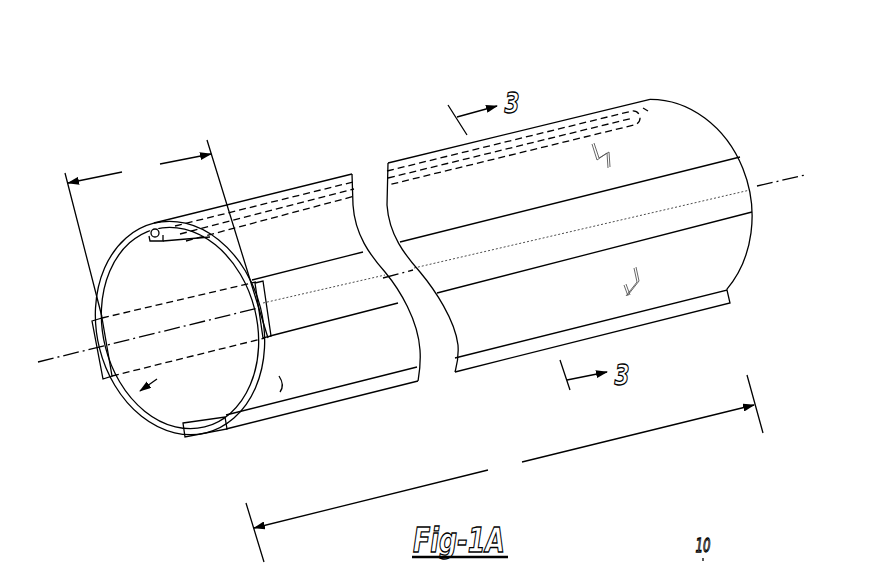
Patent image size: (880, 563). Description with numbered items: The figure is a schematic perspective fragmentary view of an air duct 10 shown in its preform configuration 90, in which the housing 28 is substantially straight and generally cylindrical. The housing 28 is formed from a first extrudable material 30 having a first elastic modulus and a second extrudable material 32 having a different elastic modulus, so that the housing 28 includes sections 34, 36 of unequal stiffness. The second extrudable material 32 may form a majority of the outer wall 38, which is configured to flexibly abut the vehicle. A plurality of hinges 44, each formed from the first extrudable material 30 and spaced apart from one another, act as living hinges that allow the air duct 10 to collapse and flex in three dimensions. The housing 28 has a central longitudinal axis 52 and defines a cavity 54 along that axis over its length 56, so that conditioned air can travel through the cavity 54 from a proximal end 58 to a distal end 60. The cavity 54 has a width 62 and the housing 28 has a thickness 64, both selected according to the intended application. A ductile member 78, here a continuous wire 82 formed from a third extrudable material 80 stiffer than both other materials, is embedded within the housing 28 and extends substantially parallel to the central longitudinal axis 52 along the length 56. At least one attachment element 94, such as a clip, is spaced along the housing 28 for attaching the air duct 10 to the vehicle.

The air duct 10 is at (421, 257).
The housing 28 is at (128, 236).
The first extrudable material 30 is at (258, 331).
The second extrudable material 32 is at (207, 242).
The section 34 is at (147, 424).
The section 36 is at (318, 329).
The outer wall 38 is at (282, 389).
The hinges 44 is at (262, 297).
The central longitudinal axis 52 is at (787, 173).
The cavity 54 is at (137, 280).
The length 56 is at (504, 468).
The proximal end 58 is at (233, 441).
The distal end 60 is at (734, 319).
The width 62 is at (166, 239).
The thickness 64 is at (121, 405).
The ductile member 78 is at (152, 230).
The third extrudable material 80 is at (268, 198).
The continuous wire 82 is at (491, 167).
The preform configuration 90 is at (110, 468).
The attachment element 94 is at (602, 150).